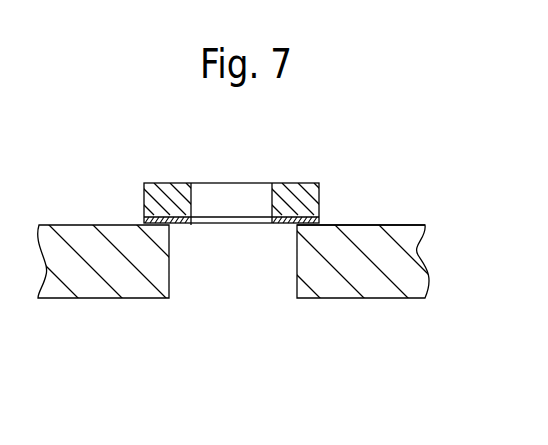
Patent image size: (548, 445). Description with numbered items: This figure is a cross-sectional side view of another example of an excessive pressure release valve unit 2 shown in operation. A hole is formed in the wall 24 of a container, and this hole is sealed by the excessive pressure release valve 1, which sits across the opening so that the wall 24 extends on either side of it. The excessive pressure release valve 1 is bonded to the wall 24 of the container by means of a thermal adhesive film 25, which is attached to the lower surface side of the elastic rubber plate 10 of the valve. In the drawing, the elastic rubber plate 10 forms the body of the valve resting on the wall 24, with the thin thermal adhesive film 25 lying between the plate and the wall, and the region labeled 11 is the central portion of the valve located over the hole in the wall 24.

The excessive pressure release valve 1 is at (240, 175).
The elastic rubber plate 10 is at (157, 198).
The thermal adhesive film 25 is at (143, 222).
The excessive pressure release valve unit 2 is at (237, 311).
The recess 11 is at (236, 198).
The wall 24 is at (393, 236).